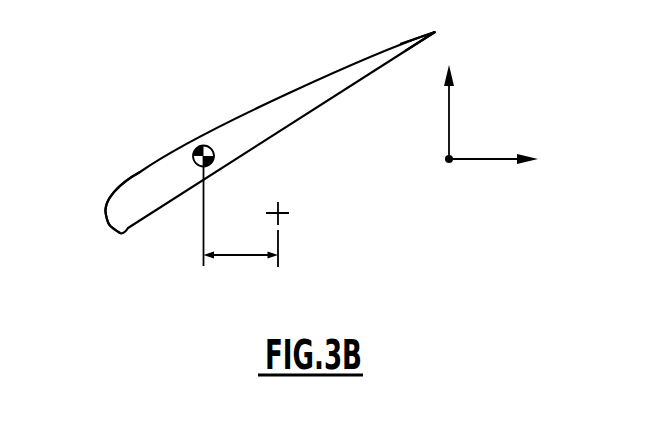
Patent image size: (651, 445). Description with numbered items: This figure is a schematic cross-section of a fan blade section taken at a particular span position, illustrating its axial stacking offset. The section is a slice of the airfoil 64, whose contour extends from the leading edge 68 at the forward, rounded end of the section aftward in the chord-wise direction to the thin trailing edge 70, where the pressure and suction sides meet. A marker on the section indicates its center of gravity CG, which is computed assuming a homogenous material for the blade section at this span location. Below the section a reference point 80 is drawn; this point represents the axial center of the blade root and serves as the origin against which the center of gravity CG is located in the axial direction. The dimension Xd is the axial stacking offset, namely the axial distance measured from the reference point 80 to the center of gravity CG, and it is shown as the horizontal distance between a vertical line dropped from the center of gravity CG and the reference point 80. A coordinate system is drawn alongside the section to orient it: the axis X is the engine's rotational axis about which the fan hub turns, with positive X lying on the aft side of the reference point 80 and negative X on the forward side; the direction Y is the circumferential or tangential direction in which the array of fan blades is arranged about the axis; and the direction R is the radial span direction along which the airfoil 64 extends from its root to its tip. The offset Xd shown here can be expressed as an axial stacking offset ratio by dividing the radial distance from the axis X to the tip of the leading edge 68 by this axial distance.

The airfoil 64 is at (252, 76).
The leading edge 68 is at (112, 222).
The trailing edge 70 is at (435, 32).
The reference point 80 is at (289, 215).
The center of gravity CG is at (207, 146).
The axial stacking offset Xd is at (240, 257).
The radial span direction R is at (449, 162).
The axis X is at (497, 159).
The circumferential or tangential direction Y is at (449, 113).